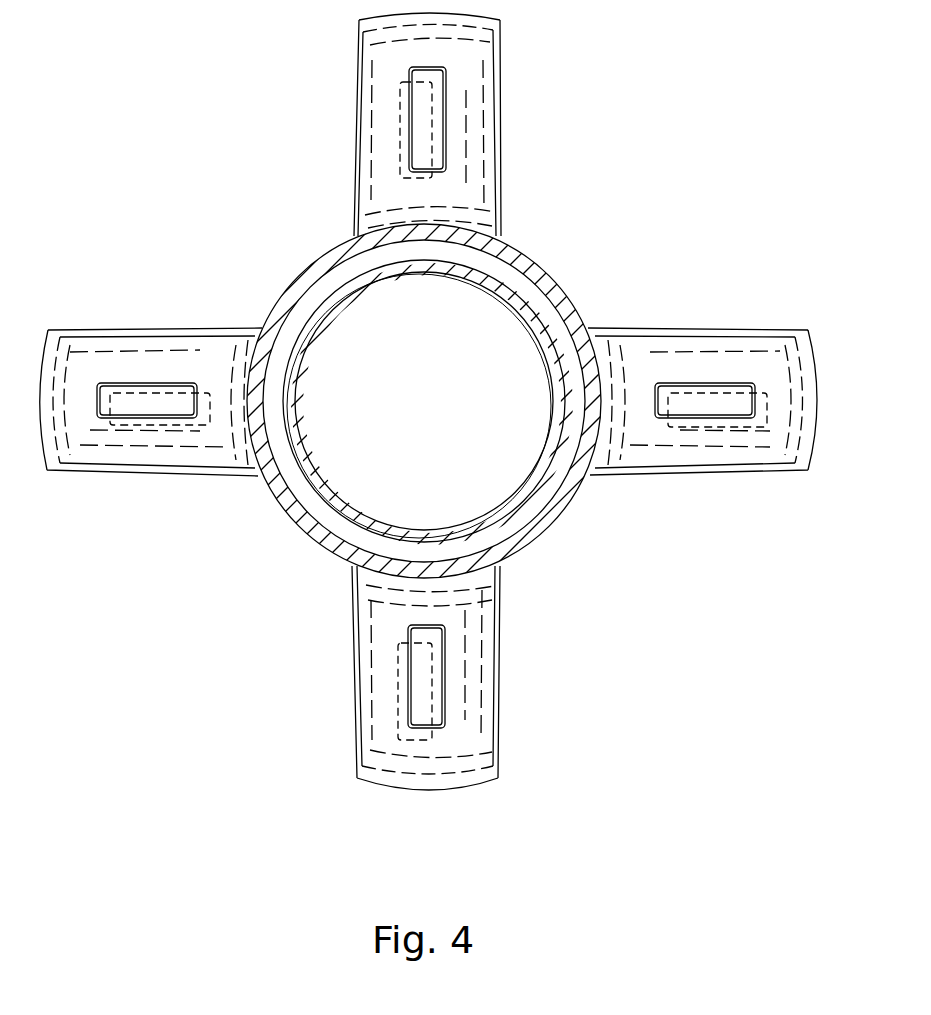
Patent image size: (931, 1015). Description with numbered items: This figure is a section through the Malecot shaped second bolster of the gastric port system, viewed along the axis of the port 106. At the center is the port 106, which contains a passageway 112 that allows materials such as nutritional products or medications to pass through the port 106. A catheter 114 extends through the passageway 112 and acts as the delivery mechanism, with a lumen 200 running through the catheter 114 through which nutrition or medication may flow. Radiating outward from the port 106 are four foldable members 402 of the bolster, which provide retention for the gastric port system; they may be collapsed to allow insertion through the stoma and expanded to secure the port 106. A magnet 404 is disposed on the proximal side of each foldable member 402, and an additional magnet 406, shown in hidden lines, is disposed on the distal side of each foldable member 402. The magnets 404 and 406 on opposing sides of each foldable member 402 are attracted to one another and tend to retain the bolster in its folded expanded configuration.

The port 106 is at (550, 528).
The passageway 112 is at (548, 492).
The catheter 114 is at (533, 308).
The lumen 200 is at (478, 318).
The foldable member 402 is at (498, 170).
The magnet 404 is at (410, 152).
The additional magnet 406 is at (400, 98).